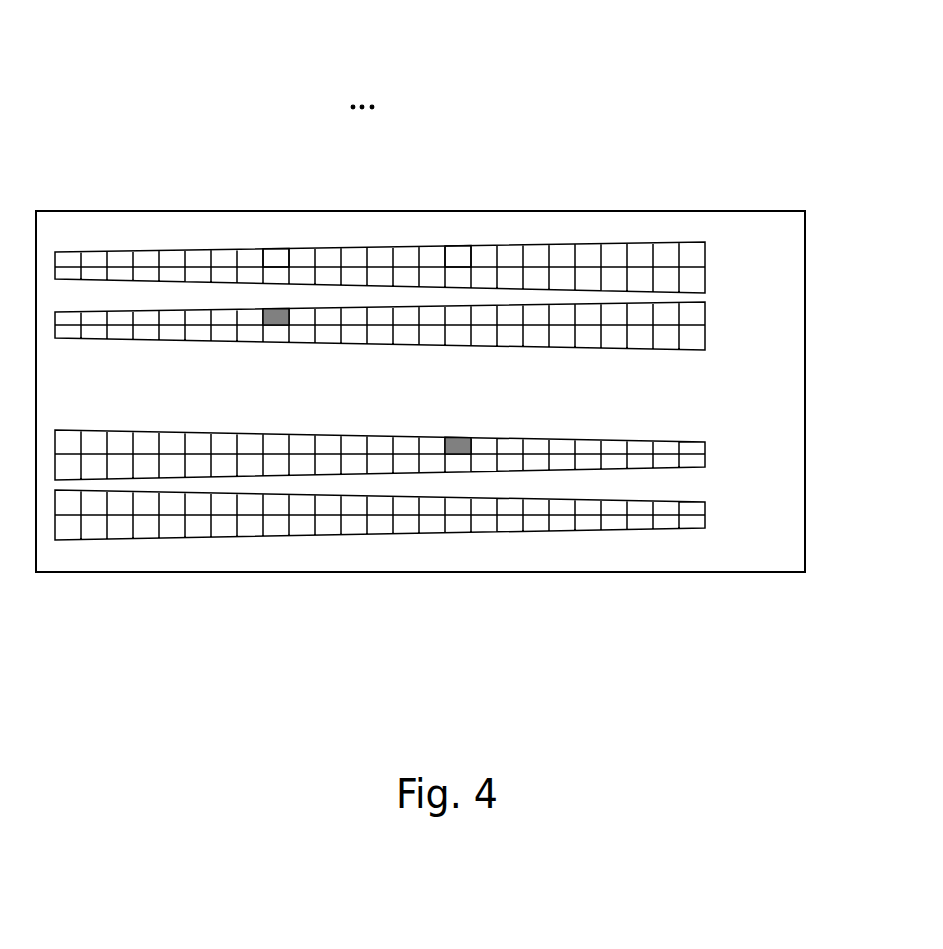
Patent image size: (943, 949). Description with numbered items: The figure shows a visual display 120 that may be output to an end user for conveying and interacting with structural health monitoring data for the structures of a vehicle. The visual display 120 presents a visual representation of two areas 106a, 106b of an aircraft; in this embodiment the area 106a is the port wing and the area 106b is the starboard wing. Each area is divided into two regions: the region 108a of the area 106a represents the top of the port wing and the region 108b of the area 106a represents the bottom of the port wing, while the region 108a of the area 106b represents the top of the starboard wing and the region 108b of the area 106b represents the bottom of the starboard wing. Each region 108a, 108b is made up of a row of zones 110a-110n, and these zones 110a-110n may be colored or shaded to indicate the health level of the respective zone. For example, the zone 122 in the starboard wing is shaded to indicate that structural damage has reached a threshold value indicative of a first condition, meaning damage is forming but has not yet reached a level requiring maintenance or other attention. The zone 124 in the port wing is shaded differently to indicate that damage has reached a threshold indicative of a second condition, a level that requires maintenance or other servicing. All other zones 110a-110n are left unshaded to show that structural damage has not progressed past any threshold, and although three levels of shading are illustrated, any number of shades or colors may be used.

The area 106a is at (122, 190).
The area 106b is at (200, 572).
The region 108a is at (688, 257).
The region 108b is at (688, 315).
The zone 110a is at (277, 255).
The zone 110n is at (460, 255).
The visual display 120 is at (634, 82).
The zone 122 is at (457, 455).
The zone 124 is at (278, 328).